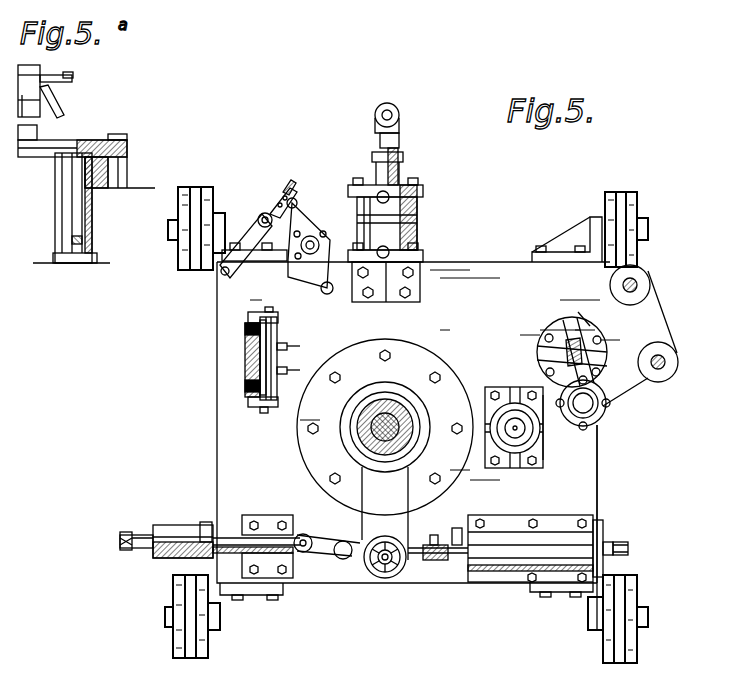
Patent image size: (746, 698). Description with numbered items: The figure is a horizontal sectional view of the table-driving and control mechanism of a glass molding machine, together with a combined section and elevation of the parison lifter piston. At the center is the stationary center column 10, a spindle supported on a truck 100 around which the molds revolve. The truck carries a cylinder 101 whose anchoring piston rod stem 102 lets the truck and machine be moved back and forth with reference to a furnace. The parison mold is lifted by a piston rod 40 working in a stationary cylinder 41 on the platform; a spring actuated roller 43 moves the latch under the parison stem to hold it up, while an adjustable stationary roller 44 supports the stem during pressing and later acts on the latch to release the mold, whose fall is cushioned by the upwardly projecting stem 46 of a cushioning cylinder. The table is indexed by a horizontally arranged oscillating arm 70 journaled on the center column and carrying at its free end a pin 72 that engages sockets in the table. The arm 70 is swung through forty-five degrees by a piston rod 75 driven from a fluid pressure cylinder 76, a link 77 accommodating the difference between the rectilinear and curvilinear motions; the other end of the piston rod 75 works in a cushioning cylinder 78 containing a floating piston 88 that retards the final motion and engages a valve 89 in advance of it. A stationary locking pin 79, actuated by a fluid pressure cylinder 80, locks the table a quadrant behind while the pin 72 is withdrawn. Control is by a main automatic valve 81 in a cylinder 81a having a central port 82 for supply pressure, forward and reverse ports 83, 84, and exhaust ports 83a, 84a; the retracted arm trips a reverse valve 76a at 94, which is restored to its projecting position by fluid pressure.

In FIG. 5, the stationary center column 10 is at (398, 410).
In FIG. 5A, the piston rod 40 is at (77, 145).
In FIG. 5, the piston rod 40 is at (311, 240).
In FIG. 5A, the stationary cylinder 41 is at (80, 220).
In FIG. 5A, the spring actuated roller 43 is at (62, 76).
In FIG. 5, the spring actuated roller 43 is at (262, 216).
In FIG. 5, the adjustable stationary roller 44 is at (548, 352).
In FIG. 5, the upwardly projecting stem 46 is at (583, 403).
In FIG. 5, the oscillating arm 70 is at (375, 505).
In FIG. 5, the pin 72 is at (383, 566).
In FIG. 5, the piston rod 75 is at (423, 556).
In FIG. 5, the fluid pressure cylinder 76 is at (555, 560).
In FIG. 5, the reverse valve 76a is at (628, 548).
In FIG. 5, the link 77 is at (330, 530).
In FIG. 5, the cushioning cylinder 78 is at (178, 525).
In FIG. 5, the locking pin 79 is at (517, 430).
In FIG. 5, the fluid pressure cylinder 80 is at (537, 412).
In FIG. 5, the main automatic valve 81 is at (250, 385).
In FIG. 5, the cylinder 81a is at (270, 327).
In FIG. 5, the central port 82 is at (250, 360).
In FIG. 5, the forward port 83 is at (287, 346).
In FIG. 5, the exhaust port 83a is at (245, 333).
In FIG. 5, the reverse port 84 is at (285, 370).
In FIG. 5, the exhaust port 84a is at (252, 385).
In FIG. 5, the floating piston 88 is at (165, 556).
In FIG. 5, the valve 89 is at (130, 548).
In FIG. 5, the reverse valve location 94 is at (615, 540).
In FIG. 5, the truck 100 is at (575, 495).
In FIG. 5, the cylinder 101 is at (418, 215).
In FIG. 5, the anchoring piston rod stem 102 is at (400, 141).